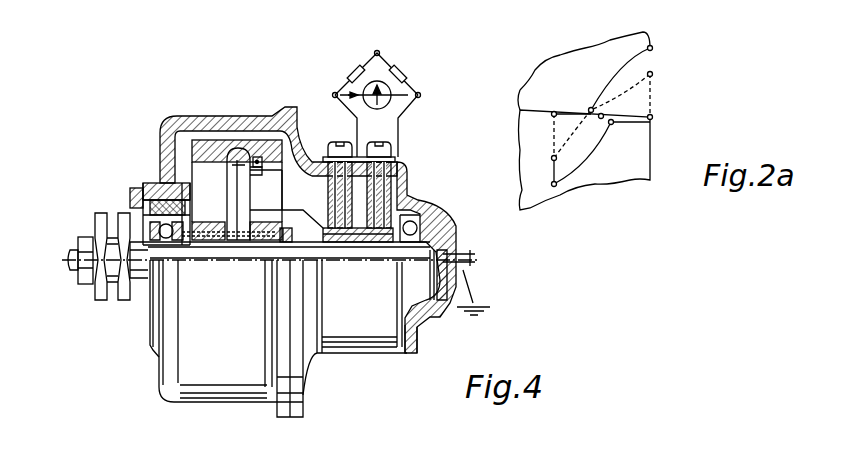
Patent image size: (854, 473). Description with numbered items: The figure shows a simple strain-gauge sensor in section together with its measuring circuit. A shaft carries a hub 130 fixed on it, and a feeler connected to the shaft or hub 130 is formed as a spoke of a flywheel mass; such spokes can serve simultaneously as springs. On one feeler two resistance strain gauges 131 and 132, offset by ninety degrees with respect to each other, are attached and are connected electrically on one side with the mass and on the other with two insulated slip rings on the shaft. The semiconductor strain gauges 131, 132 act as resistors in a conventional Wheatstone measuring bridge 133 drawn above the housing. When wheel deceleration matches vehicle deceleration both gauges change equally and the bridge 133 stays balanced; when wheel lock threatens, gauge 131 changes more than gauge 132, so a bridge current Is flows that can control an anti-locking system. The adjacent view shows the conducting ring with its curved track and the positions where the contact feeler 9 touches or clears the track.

In FIG. 4, the hub 130 is at (270, 235).
In FIG. 4, the resistance strain gauge 131 is at (230, 148).
In FIG. 4, the resistance strain gauge 132 is at (253, 150).
In FIG. 4, the measuring bridge 133 is at (372, 55).
In FIG. 4, the bridge current Is is at (343, 88).
In FIG. 2A, the sensing element 9 is at (603, 115).